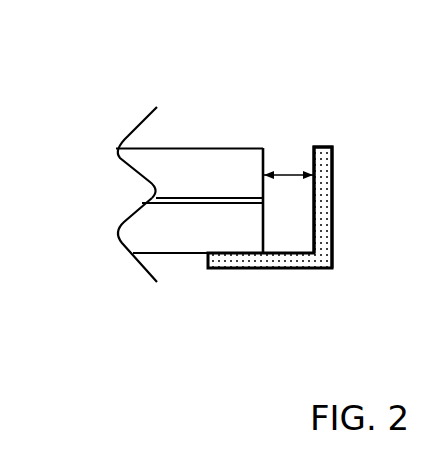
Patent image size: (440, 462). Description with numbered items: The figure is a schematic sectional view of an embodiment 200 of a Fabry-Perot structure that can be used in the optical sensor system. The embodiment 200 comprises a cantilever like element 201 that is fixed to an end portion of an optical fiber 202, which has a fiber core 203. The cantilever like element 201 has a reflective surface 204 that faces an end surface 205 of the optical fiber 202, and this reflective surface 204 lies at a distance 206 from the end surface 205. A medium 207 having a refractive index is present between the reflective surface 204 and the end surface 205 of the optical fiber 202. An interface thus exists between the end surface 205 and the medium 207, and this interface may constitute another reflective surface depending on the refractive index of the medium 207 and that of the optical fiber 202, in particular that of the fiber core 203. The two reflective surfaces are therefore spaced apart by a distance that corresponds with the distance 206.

The embodiment of Fabry-Perot structure 200 is at (85, 40).
The cantilever like element 201 is at (270, 249).
The optical fiber 202 is at (189, 139).
The fiber core 203 is at (190, 240).
The reflective surface 204 is at (314, 173).
The end surface 205 is at (260, 165).
The distance 206 is at (288, 201).
The medium 207 is at (344, 229).